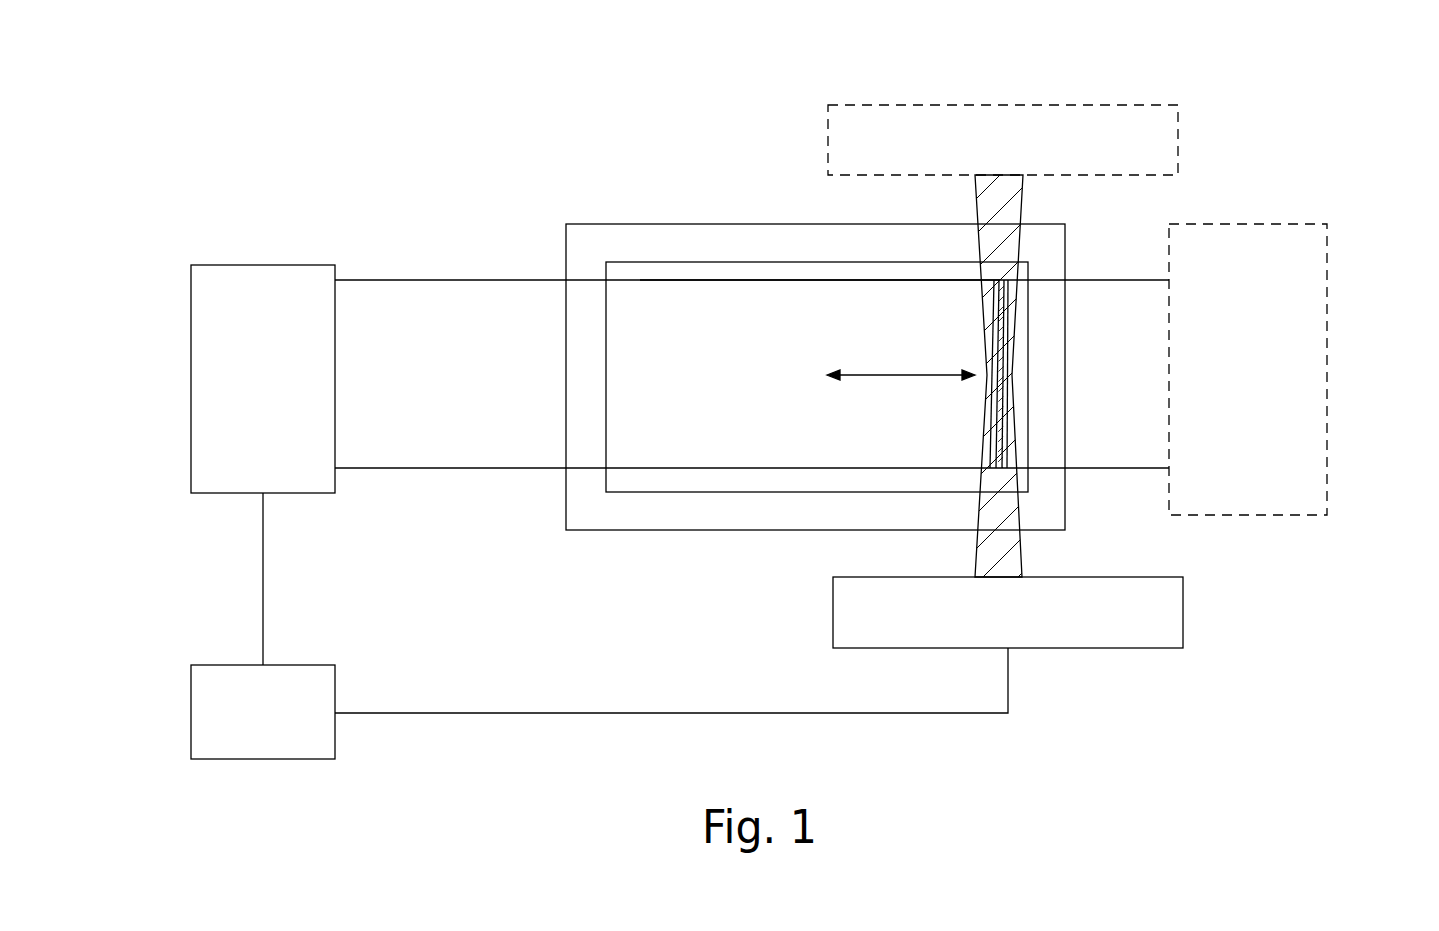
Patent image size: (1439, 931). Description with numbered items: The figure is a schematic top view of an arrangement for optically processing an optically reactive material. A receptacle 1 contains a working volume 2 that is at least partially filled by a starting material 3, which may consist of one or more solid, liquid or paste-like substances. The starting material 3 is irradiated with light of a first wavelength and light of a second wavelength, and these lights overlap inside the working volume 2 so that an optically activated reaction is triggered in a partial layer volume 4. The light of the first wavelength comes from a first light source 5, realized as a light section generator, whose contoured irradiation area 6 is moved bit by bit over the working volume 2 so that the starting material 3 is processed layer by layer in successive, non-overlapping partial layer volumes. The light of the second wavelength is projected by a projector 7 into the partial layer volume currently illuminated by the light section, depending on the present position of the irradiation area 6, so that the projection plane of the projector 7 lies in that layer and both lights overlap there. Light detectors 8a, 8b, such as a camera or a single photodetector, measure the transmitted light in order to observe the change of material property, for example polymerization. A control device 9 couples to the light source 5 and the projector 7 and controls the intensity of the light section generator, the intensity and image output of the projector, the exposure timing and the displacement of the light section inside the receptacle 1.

The receptacle 1 is at (638, 512).
The working volume 2 is at (705, 295).
The starting material 3 is at (717, 470).
The partial layer volume 4 is at (1005, 460).
The first light source 5 is at (1086, 630).
The irradiation area 6 is at (1003, 262).
The projector 7 is at (200, 448).
The light detector 8a is at (970, 130).
The light detector 8b is at (1312, 313).
The control device 9 is at (205, 725).